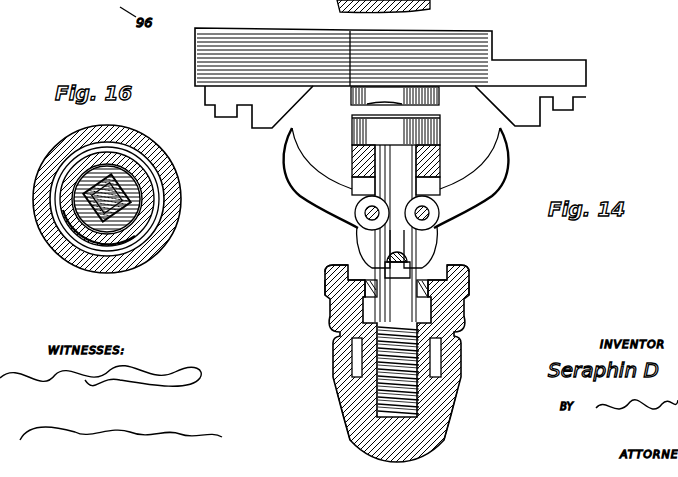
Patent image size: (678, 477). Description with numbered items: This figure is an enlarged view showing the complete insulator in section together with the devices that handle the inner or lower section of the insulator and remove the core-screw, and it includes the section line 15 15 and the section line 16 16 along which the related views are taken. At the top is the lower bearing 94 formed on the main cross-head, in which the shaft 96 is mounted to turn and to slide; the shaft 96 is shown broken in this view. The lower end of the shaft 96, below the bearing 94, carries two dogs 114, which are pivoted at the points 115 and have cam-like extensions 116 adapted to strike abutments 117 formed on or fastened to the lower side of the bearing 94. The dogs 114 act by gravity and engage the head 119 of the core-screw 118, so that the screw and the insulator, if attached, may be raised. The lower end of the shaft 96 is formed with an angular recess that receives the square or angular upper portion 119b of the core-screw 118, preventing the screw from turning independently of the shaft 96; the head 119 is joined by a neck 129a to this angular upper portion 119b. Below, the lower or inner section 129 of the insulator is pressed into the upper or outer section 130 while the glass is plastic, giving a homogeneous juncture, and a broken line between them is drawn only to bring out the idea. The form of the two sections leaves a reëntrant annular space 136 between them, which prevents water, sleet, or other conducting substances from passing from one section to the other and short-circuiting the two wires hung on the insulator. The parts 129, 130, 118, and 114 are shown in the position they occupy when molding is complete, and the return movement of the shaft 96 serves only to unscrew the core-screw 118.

In FIG. 16, the lower bearing 94 is at (140, 188).
In FIG. 14, the lower bearing 94 is at (478, 42).
In FIG. 16, the shaft 96 is at (92, 212).
In FIG. 14, the shaft 96 is at (440, 100).
In FIG. 14, the abutments 117 is at (395, 107).
In FIG. 14, the cam-like extensions 116 is at (283, 162).
In FIG. 14, the pivot points 115 is at (370, 214).
In FIG. 14, the dogs 114 is at (368, 240).
In FIG. 14, the head of core-screw 119 is at (440, 262).
In FIG. 14, the left lug 129a is at (330, 270).
In FIG. 14, the angular upper portion of core-screw 119b is at (470, 274).
In FIG. 14, the section line 16 16 is at (297, 290).
In FIG. 14, the section line 15 15 is at (360, 277).
In FIG. 16, the lower or inner section of insulator 129 is at (173, 217).
In FIG. 14, the lower or inner section of insulator 129 is at (450, 318).
In FIG. 14, the core-screw 118 is at (432, 358).
In FIG. 14, the upper or outer section of insulator 130 is at (453, 405).
In FIG. 14, the reëntrant annular space 136 is at (335, 367).